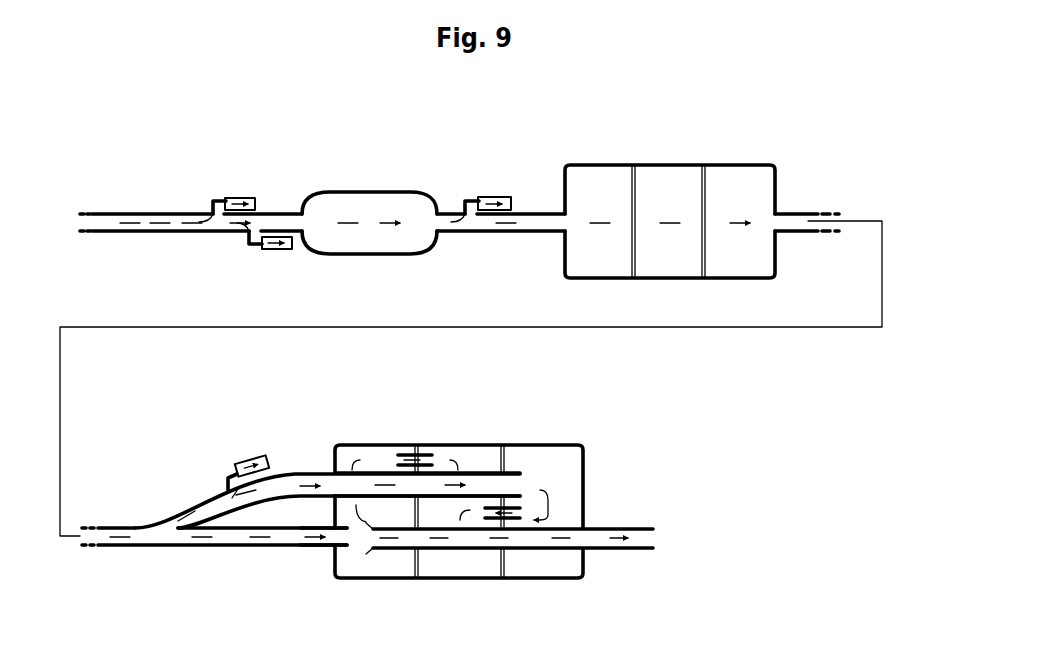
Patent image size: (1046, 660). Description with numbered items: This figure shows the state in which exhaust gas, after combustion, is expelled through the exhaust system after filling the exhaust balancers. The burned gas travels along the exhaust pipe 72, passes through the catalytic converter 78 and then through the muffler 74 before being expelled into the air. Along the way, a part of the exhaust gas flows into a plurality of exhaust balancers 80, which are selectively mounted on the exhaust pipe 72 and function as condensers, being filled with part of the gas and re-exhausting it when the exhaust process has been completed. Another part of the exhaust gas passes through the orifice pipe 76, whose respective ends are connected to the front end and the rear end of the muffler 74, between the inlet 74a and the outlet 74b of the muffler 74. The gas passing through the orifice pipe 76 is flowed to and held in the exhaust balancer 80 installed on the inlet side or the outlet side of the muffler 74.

The exhaust pipe 72 is at (272, 213).
The muffler 74 is at (491, 517).
The inlet of the muffler 74a is at (314, 472).
The outlet of the muffler 74b is at (614, 527).
The orifice pipe 76 is at (310, 549).
The catalytic converter 78 is at (369, 190).
The exhaust balancer 80 is at (240, 196).